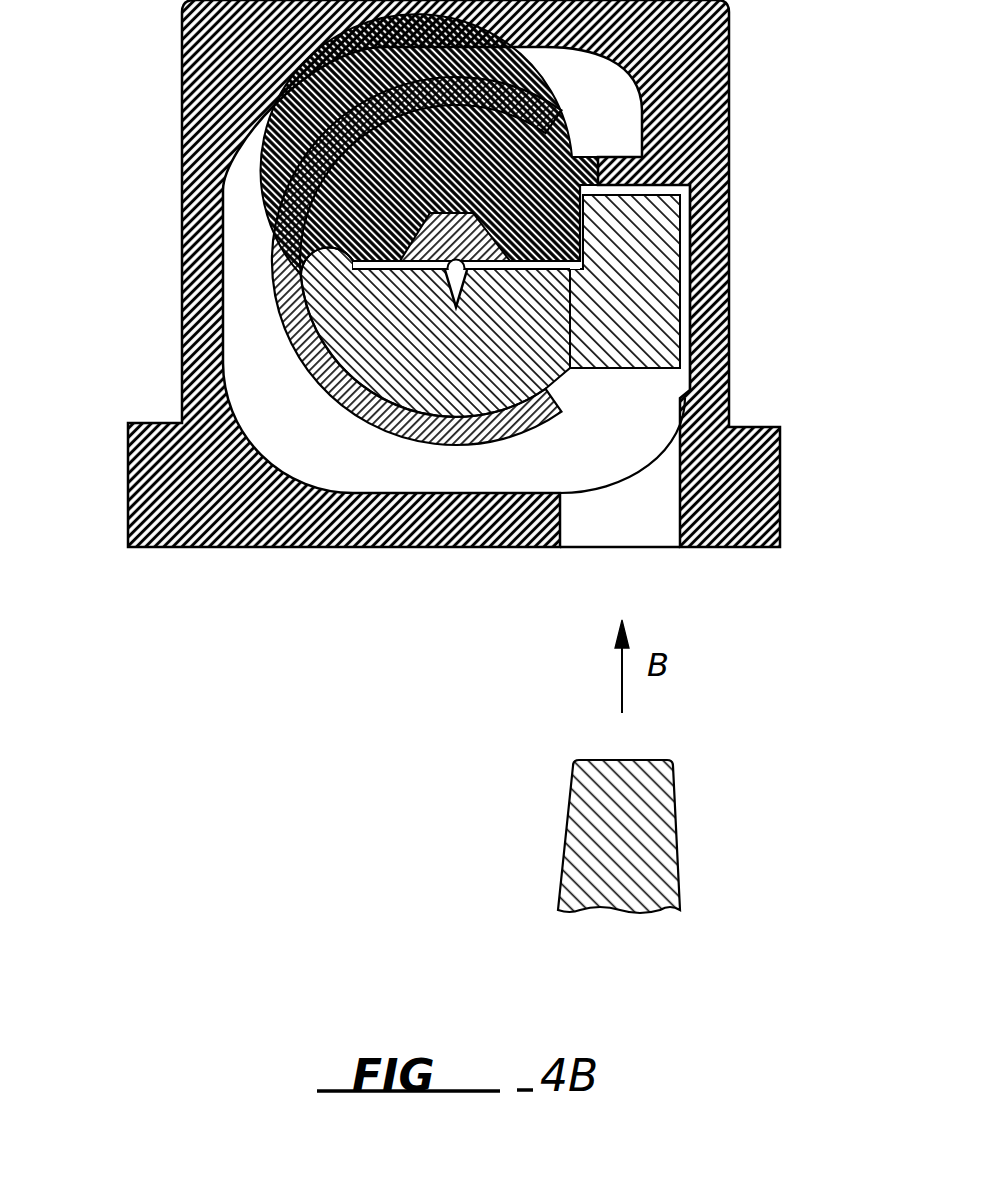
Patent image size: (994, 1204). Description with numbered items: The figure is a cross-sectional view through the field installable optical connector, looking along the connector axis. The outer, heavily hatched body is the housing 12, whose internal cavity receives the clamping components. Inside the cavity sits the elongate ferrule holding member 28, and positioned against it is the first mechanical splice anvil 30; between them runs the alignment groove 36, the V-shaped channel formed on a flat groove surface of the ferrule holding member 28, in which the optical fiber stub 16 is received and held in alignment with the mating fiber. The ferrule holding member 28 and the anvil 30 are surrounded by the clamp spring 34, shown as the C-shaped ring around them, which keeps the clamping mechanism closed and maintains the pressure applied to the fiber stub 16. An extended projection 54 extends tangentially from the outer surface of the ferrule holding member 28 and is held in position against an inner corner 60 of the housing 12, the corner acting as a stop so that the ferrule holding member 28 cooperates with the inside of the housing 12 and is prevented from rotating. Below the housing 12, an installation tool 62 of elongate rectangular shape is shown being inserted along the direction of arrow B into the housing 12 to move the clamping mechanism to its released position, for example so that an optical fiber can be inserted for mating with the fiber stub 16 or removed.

The housing 12 is at (700, 60).
The optical fiber stub 16 is at (490, 298).
The ferrule holding member 28 is at (341, 300).
The first mechanical splice anvil 30 is at (512, 182).
The clamp spring 34 is at (292, 187).
The alignment groove 36 is at (447, 298).
The extended projection 54 is at (640, 270).
The inner corner 60 is at (694, 197).
The installation tool 62 is at (620, 880).